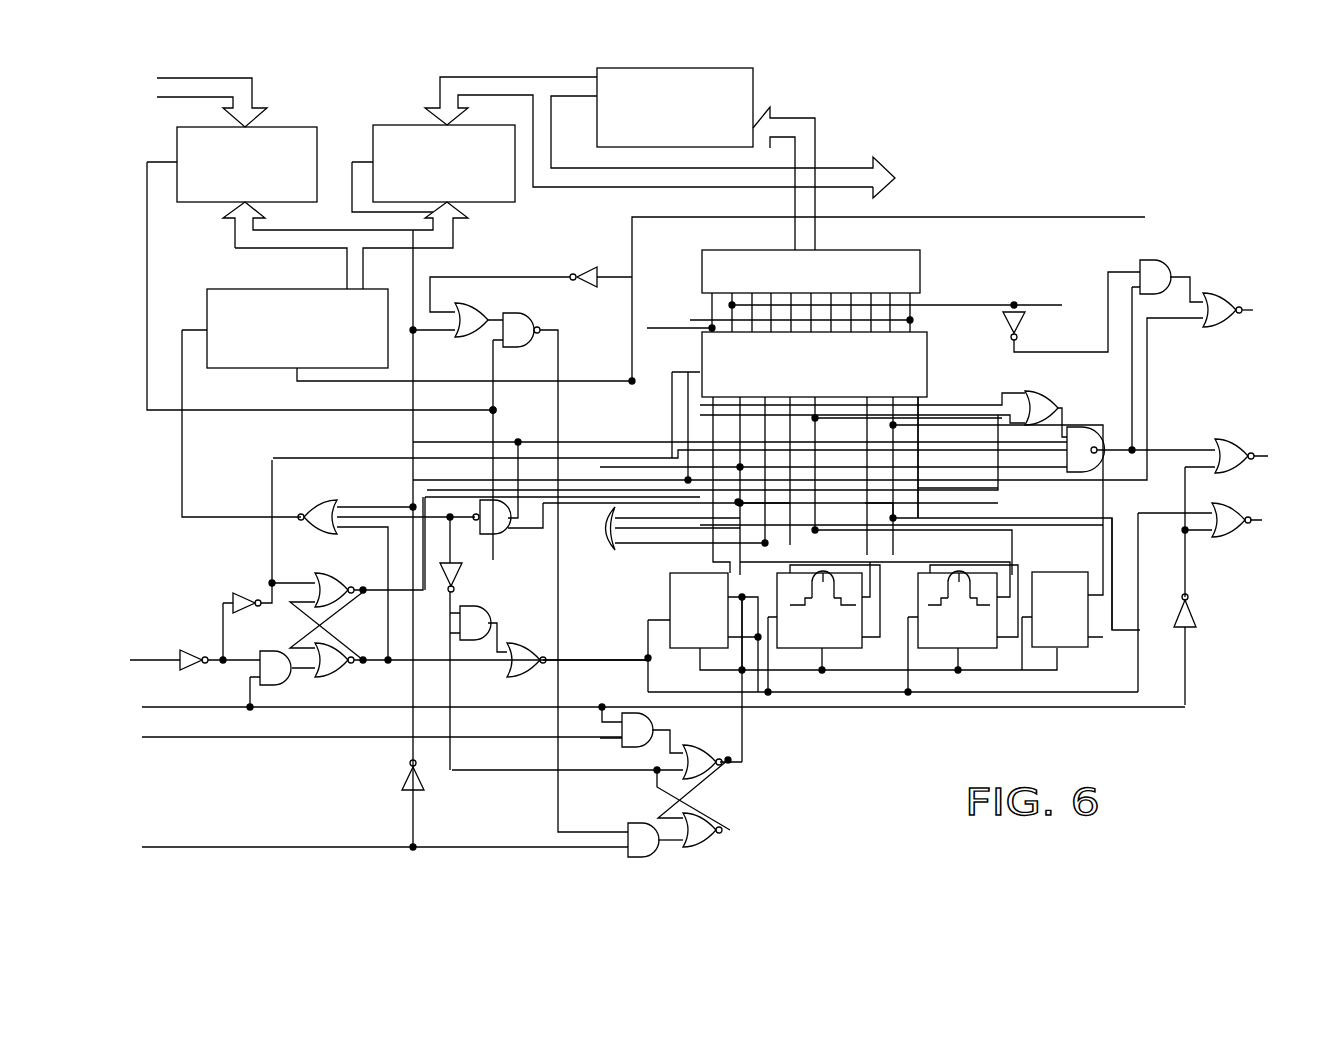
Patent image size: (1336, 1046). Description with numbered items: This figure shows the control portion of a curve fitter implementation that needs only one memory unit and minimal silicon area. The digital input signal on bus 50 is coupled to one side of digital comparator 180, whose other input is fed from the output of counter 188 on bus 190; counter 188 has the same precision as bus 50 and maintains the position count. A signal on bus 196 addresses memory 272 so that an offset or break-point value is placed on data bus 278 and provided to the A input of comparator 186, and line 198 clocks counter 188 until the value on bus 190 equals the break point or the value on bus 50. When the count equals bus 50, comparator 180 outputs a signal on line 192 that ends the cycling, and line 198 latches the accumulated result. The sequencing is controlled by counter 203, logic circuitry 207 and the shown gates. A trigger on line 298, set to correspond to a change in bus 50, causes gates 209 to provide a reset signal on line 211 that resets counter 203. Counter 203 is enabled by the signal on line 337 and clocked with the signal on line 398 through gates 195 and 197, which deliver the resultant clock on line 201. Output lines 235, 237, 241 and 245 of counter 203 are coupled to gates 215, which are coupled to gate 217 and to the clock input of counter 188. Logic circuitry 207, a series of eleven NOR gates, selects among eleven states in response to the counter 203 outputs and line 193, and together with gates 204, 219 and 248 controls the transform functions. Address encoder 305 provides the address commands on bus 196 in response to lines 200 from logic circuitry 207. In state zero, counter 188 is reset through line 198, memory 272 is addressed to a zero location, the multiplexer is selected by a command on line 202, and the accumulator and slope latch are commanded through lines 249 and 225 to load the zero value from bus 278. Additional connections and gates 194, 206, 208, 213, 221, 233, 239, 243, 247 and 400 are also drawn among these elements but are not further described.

The bus 50 is at (215, 84).
The digital comparator 180 is at (288, 133).
The comparator 186 is at (478, 210).
The counter 188 is at (215, 310).
The bus 190 is at (300, 248).
The line 192 is at (152, 158).
The line 193 is at (678, 355).
The comparator input line 194 is at (350, 178).
The gates 195 is at (330, 678).
The bus 196 is at (808, 157).
The gates 197 is at (487, 665).
The line 198 is at (310, 383).
The lines 200 is at (918, 308).
The line 201 is at (627, 657).
The line 202 is at (1050, 300).
The counter 203 is at (955, 690).
The gates 204 is at (1100, 428).
The inverter 206 is at (602, 268).
The logic circuitry 207 is at (920, 365).
The NOR/NAND gates 208 is at (545, 292).
The gates 209 is at (725, 840).
The line 211 is at (732, 765).
The signal line 213 is at (690, 390).
The gates 215 is at (490, 550).
The gate 217 is at (318, 512).
The gate 219 is at (1240, 548).
The NOR gate output 221 is at (1262, 456).
The line 225 is at (1256, 538).
The signal line 233 is at (712, 404).
The output line 235 is at (740, 430).
The output line 237 is at (760, 424).
The signal line 239 is at (770, 500).
The output line 241 is at (812, 420).
The signal line 243 is at (893, 495).
The output line 245 is at (920, 398).
The signal line 247 is at (935, 425).
The gate 248 is at (1185, 262).
The line 249 is at (1252, 312).
The memory 272 is at (727, 104).
The data bus 278 is at (547, 122).
The line 298 is at (235, 740).
The address encoder 305 is at (735, 247).
The line 337 is at (176, 655).
The line 398 is at (170, 705).
The input line 400 is at (385, 845).